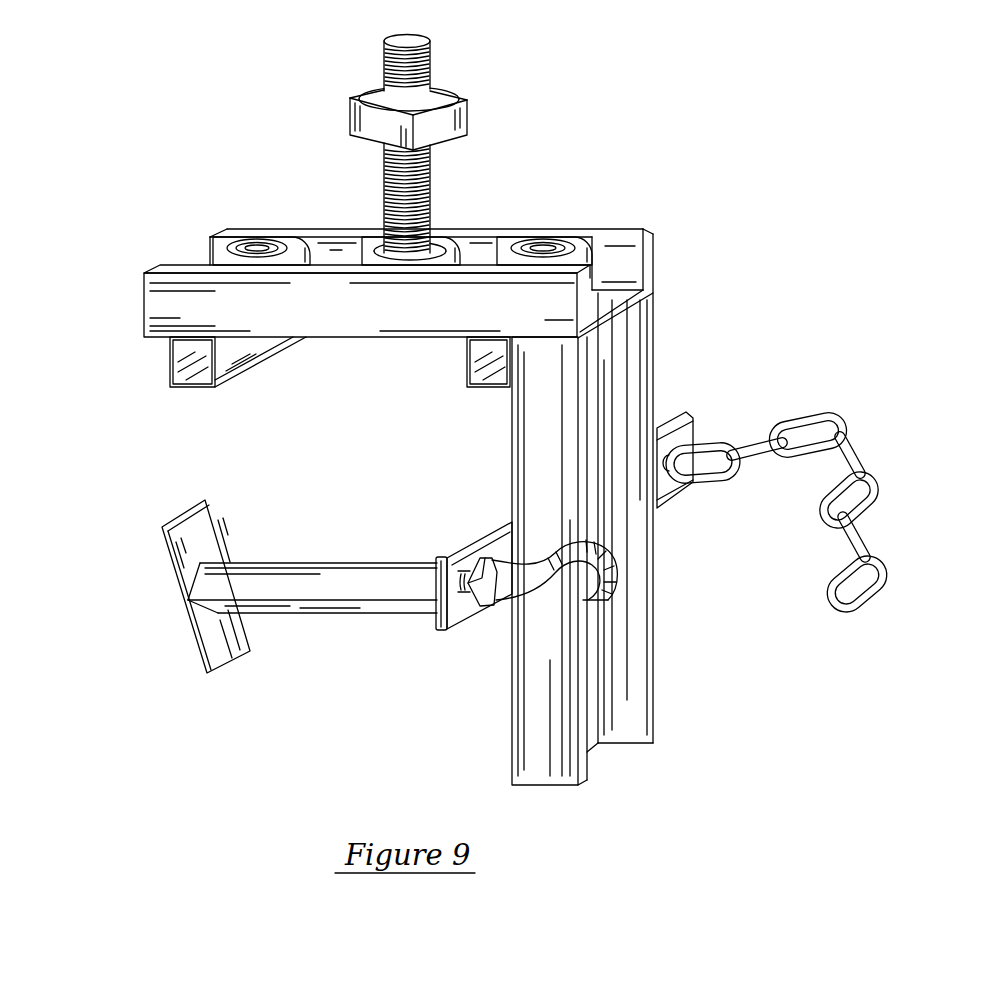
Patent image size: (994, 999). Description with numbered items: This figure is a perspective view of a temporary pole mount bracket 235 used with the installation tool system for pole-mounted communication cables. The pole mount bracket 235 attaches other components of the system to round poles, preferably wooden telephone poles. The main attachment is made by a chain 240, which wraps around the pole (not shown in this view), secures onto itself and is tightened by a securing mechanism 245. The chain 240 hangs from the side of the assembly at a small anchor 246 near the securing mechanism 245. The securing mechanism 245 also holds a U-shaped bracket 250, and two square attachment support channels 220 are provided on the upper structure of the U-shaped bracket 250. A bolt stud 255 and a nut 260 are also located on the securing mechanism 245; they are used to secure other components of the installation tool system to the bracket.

The temporary pole mount bracket 235 is at (476, 410).
The square attachment support channel 220 is at (181, 389).
The U-shaped bracket 250 is at (654, 350).
The bolt stud 255 is at (431, 62).
The nut 260 is at (358, 97).
The securing mechanism 245 is at (336, 608).
The chain anchor bracket 246 is at (695, 428).
The chain 240 is at (797, 416).